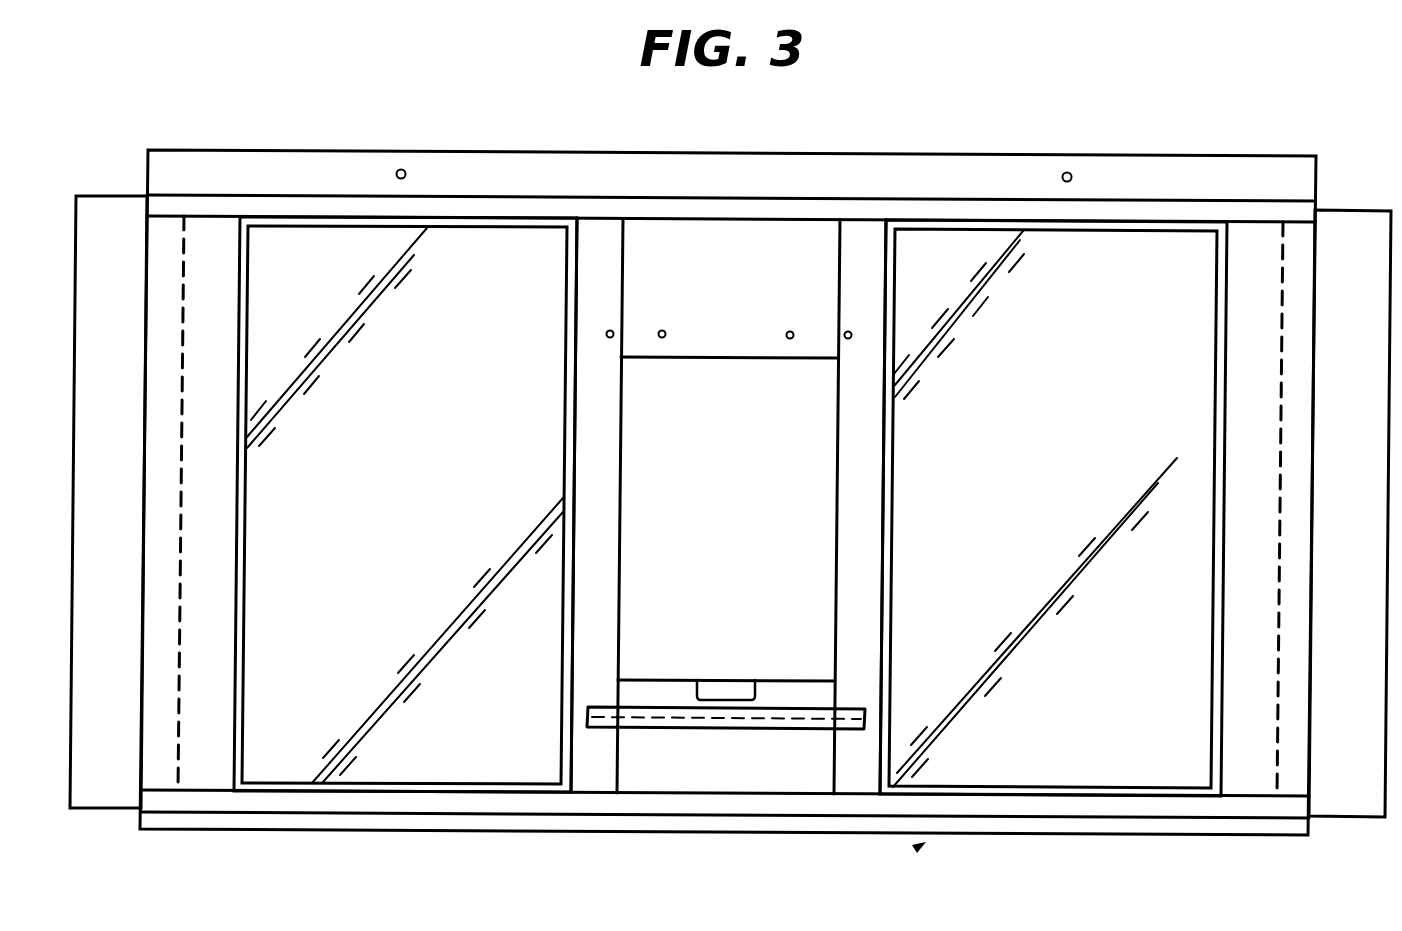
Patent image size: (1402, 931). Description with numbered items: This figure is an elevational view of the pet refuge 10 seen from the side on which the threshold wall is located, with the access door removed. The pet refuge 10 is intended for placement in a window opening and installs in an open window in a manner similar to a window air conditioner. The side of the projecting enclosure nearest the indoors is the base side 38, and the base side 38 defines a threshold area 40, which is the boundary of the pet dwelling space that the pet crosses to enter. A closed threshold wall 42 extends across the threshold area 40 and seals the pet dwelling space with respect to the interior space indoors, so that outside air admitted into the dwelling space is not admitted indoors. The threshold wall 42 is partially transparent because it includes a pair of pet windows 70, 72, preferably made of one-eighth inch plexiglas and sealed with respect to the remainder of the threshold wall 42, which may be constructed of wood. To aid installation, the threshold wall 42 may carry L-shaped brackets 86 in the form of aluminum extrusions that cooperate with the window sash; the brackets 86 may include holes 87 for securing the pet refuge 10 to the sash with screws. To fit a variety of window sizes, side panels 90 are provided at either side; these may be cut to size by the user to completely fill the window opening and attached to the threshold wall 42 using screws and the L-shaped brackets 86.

The pet refuge 10 is at (922, 846).
The base side 38 is at (1241, 243).
The threshold area 40 is at (593, 237).
The threshold wall 42 is at (437, 770).
The pet window 70 is at (1121, 252).
The pet window 72 is at (317, 240).
The L-shaped bracket 86 is at (841, 170).
The holes 87 is at (399, 169).
The side panels 90 is at (115, 213).